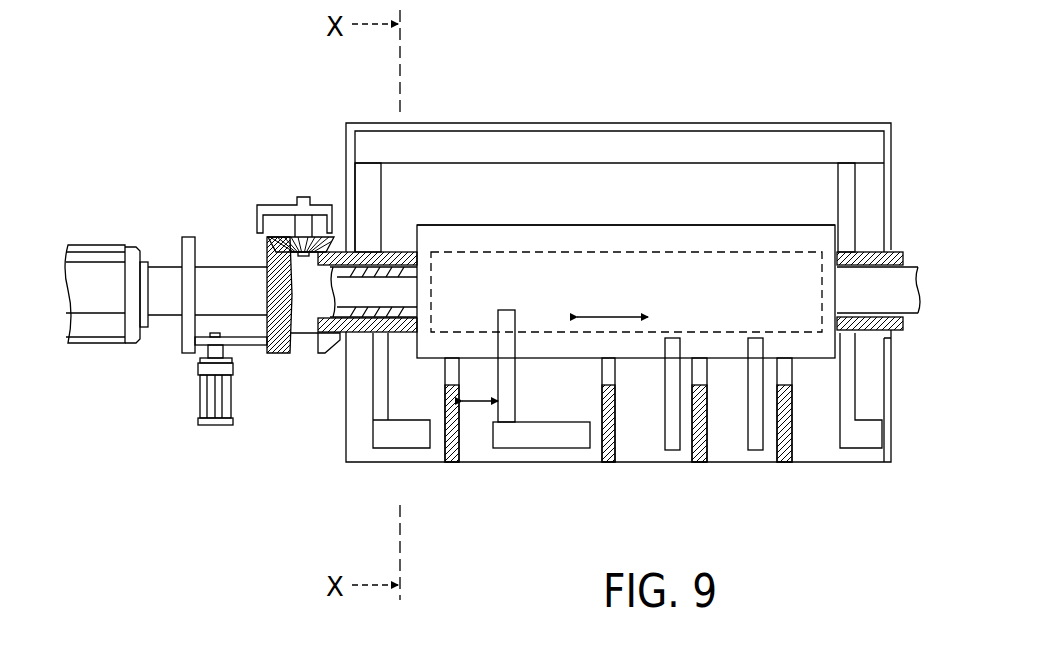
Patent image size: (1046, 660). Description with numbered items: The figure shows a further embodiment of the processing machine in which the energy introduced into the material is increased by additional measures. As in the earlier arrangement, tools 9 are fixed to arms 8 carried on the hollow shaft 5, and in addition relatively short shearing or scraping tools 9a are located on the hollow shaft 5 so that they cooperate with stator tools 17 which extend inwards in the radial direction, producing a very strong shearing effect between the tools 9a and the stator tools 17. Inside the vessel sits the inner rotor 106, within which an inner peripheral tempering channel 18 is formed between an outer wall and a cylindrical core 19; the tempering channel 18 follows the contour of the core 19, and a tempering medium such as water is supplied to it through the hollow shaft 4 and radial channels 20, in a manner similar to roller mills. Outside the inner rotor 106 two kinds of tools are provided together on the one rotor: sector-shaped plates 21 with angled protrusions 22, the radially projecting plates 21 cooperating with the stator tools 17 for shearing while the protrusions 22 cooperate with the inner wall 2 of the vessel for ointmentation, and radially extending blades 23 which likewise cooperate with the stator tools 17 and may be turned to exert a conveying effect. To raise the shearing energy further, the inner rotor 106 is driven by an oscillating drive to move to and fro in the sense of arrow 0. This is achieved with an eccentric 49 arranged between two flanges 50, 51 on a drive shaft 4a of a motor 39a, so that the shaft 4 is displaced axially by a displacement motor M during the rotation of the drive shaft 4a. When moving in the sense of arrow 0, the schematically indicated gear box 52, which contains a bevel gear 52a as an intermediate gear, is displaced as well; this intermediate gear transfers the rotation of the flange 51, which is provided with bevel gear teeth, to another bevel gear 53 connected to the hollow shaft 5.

The inner wall 2 is at (642, 443).
The hollow shaft 4 is at (372, 288).
The drive shaft 4a is at (165, 280).
The hollow shaft 5 is at (392, 270).
The arms 8 is at (370, 188).
The tools 9 is at (715, 148).
The shearing or scraping tools 9a is at (395, 442).
The stator tools 17 is at (460, 440).
The tempering channel 18 is at (512, 235).
The core 19 is at (560, 265).
The radial channels 20 is at (417, 335).
The sector-shaped plates 21 is at (515, 372).
The angled protrusions 22 is at (565, 440).
The blades 23 is at (745, 427).
The motor 39a is at (113, 347).
The eccentric 49 is at (240, 340).
The flange 50 is at (187, 358).
The flange 51 is at (267, 355).
The gear box 52 is at (260, 208).
The bevel pinion 52a is at (285, 236).
The bevel gear 53 is at (325, 353).
The inner rotor 106 is at (607, 224).
The displacement motor M is at (215, 428).
The arrow O 0 is at (612, 302).